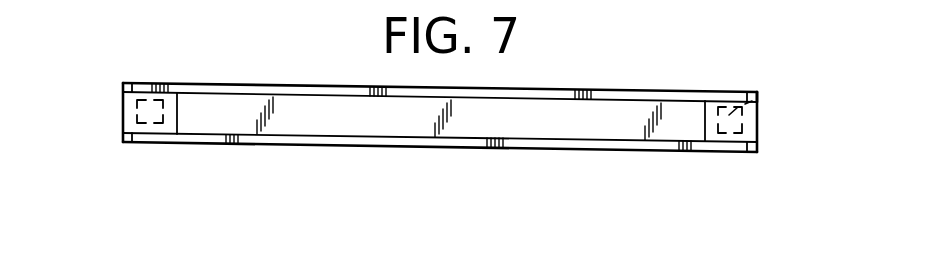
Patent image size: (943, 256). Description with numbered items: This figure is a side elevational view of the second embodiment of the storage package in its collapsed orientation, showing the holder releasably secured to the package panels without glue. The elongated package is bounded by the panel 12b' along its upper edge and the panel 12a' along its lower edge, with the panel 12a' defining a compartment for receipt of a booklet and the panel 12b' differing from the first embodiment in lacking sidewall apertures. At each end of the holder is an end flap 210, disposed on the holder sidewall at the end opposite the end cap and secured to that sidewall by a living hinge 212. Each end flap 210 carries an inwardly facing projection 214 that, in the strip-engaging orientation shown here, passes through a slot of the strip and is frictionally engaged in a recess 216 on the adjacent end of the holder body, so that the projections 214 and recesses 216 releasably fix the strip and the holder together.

The living hinge 212 is at (757, 120).
The inwardly facing projection 214 is at (762, 97).
The recess 216 is at (724, 108).
The end flap 210 is at (127, 108).
The panel 12a' is at (458, 163).
The panel 12b' is at (371, 70).